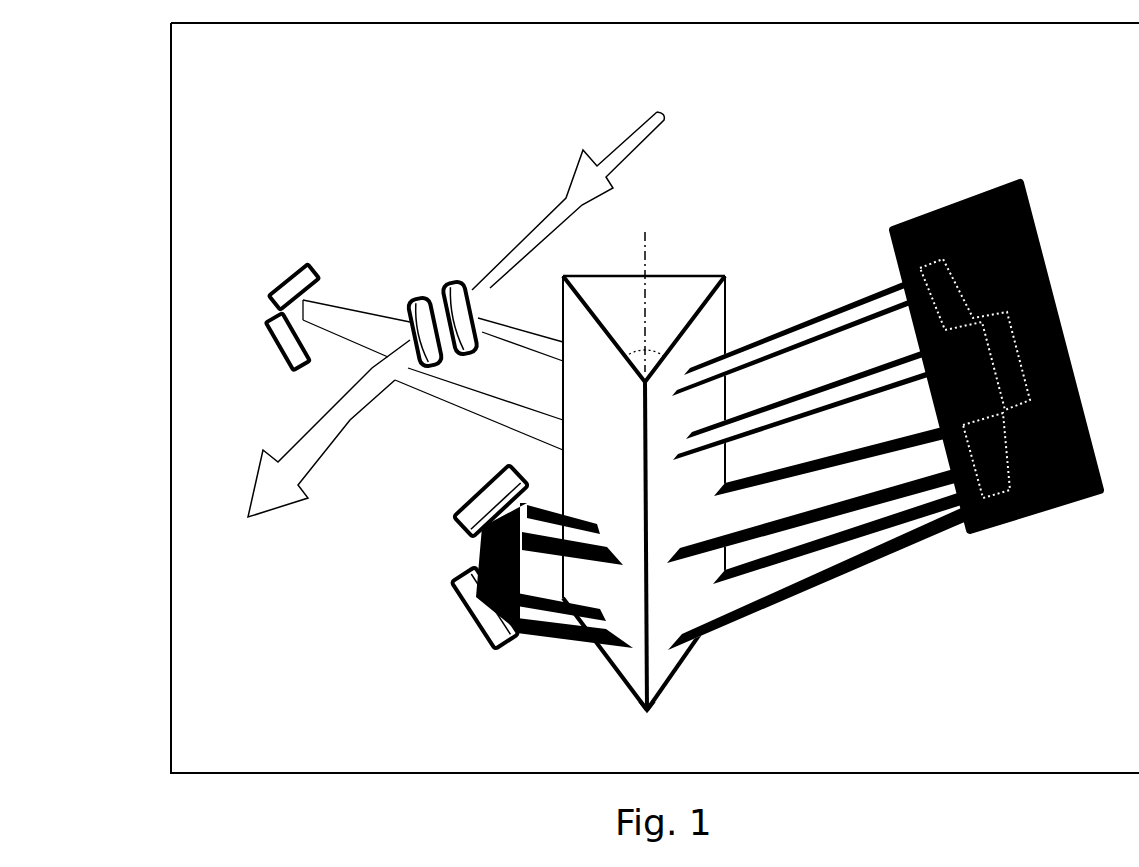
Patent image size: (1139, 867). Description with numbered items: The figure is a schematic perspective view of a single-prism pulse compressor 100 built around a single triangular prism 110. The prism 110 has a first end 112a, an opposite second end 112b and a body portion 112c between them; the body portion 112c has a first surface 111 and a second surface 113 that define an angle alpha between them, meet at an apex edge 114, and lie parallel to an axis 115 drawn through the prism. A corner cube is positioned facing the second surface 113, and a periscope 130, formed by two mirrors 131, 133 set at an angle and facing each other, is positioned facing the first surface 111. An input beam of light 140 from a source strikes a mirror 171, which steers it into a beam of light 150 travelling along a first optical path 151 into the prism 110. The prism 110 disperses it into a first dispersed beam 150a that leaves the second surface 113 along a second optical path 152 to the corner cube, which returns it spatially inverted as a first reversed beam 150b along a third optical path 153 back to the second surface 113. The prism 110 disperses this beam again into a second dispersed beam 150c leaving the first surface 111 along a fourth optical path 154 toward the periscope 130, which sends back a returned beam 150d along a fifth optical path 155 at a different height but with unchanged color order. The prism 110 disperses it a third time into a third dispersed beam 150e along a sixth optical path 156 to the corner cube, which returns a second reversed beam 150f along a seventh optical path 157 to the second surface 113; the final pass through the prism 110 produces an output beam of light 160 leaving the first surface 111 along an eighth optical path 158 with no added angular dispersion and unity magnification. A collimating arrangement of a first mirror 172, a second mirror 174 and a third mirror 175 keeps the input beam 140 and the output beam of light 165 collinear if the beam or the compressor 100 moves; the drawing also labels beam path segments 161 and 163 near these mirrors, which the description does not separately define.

The single-prism pulse compressor 100 is at (305, 76).
The prism 110 is at (620, 260).
The first surface 111 is at (625, 663).
The first end 112a is at (700, 285).
The second end 112b is at (640, 706).
The body portion 112c is at (668, 300).
The second surface 113 is at (685, 652).
The apex edge 114 is at (655, 690).
The axis 115 is at (642, 287).
The periscope 130 is at (428, 548).
The mirror 131 is at (465, 614).
The mirror 133 is at (480, 500).
The input beam of light 140 is at (530, 232).
The beam of light 150 is at (537, 338).
The first dispersed beam of light 150a is at (792, 328).
The first reversed beam of light 150b is at (887, 522).
The second dispersed beam of light 150c is at (537, 632).
The returned beam of light 150d is at (588, 518).
The third dispersed beam of light 150e is at (875, 448).
The second reversed beam of light 150f is at (867, 378).
The first optical path 151 is at (522, 358).
The second optical path 152 is at (803, 343).
The third optical path 153 is at (829, 572).
The fourth optical path 154 is at (575, 639).
The fifth optical path 155 is at (572, 551).
The sixth optical path 156 is at (831, 510).
The seventh optical path 157 is at (819, 409).
The eighth optical path 158 is at (479, 416).
The output beam of light 160 is at (497, 406).
The beam segment 161 is at (302, 322).
The beam segment 163 is at (368, 312).
The output beam of light 165 is at (342, 428).
The mirror 171 is at (462, 290).
The first mirror 172 is at (270, 344).
The second mirror 174 is at (290, 282).
The third mirror 175 is at (417, 306).